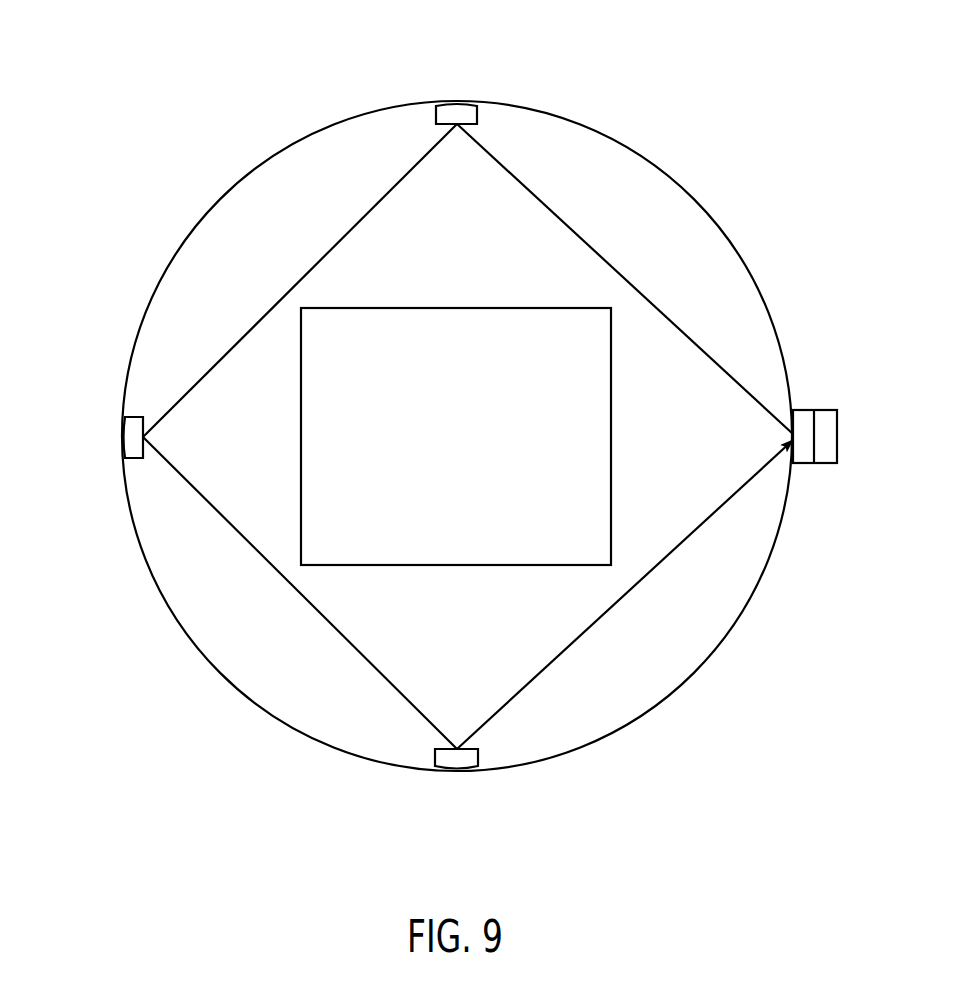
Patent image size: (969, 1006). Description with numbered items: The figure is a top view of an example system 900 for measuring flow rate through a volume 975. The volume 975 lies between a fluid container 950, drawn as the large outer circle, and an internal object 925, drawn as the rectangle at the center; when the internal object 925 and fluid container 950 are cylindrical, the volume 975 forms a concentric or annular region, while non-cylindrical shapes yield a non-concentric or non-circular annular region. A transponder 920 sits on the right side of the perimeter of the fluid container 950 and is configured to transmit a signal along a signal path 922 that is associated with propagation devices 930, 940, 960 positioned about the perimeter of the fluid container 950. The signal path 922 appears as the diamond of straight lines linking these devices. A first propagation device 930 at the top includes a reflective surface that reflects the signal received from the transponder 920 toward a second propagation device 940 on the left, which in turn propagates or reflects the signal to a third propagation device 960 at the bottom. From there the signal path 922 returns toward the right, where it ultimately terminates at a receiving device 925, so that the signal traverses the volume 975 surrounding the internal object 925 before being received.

The system 900 is at (679, 128).
The transponder 920 is at (806, 410).
The signal path 922 is at (637, 290).
The internal object 925 is at (457, 308).
The first propagation device 930 is at (457, 104).
The second propagation device 940 is at (123, 437).
The fluid container 950 is at (203, 658).
The third propagation device 960 is at (457, 771).
The volume 975 is at (479, 641).